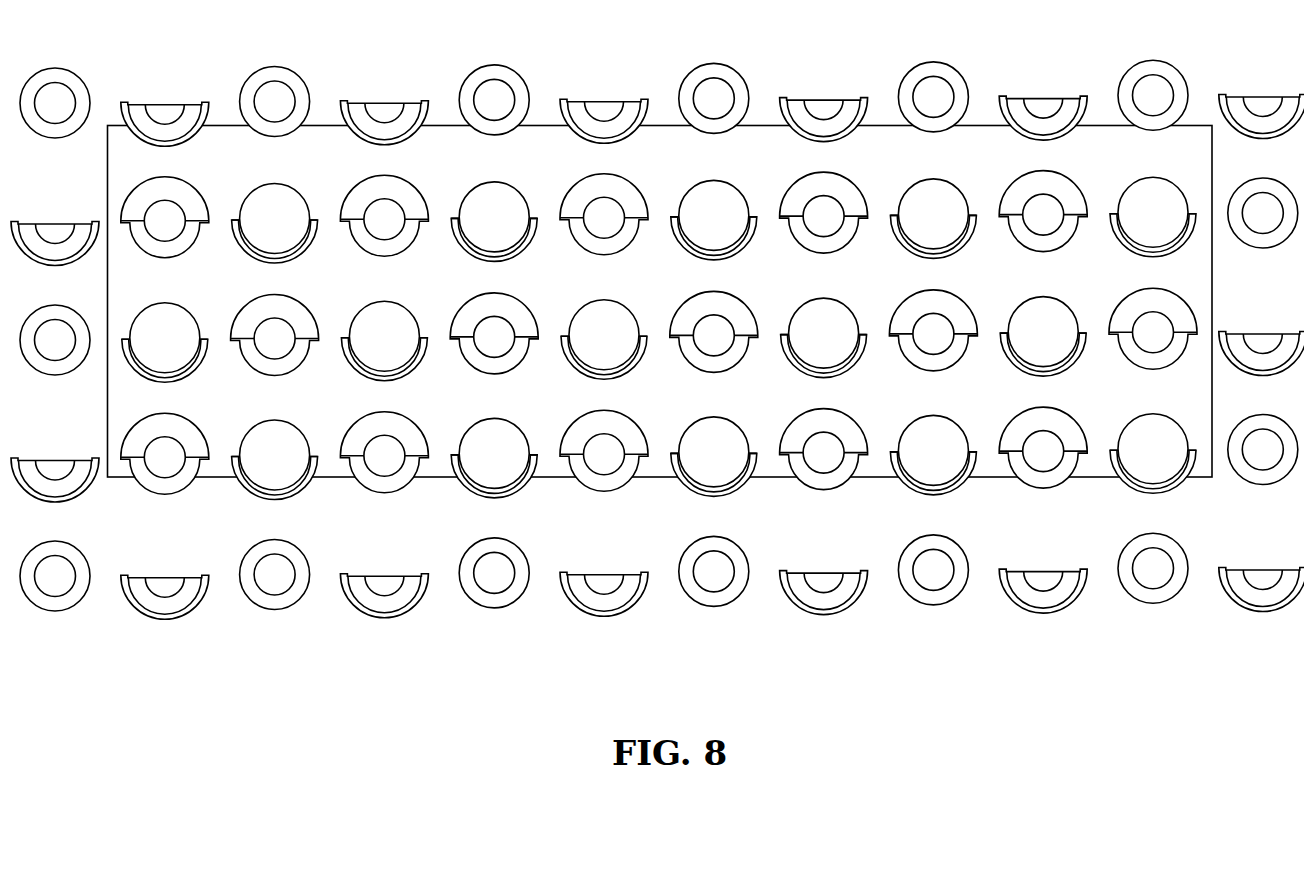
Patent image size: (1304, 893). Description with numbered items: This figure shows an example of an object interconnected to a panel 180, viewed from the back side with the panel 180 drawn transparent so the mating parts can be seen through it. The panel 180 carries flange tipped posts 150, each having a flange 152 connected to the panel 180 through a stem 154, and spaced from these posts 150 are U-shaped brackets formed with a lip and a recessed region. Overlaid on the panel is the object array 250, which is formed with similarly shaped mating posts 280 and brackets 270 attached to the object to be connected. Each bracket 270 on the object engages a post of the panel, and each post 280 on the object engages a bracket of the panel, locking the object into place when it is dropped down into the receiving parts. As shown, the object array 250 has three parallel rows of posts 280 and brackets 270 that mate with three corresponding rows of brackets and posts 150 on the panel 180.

The flange tipped post 150 is at (933, 571).
The flange 152 is at (910, 558).
The stem 154 is at (953, 593).
The panel 180 is at (838, 612).
The object array 250 is at (1200, 172).
The bracket 270 is at (1122, 310).
The post 280 is at (1130, 420).